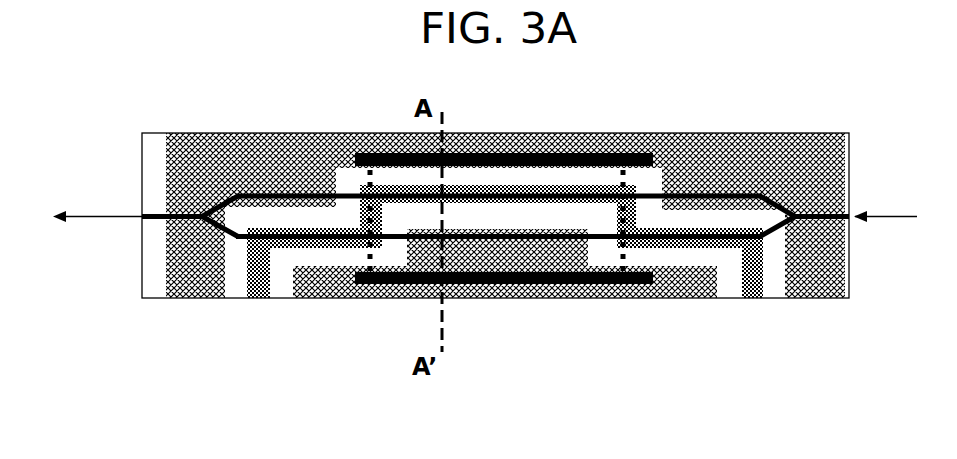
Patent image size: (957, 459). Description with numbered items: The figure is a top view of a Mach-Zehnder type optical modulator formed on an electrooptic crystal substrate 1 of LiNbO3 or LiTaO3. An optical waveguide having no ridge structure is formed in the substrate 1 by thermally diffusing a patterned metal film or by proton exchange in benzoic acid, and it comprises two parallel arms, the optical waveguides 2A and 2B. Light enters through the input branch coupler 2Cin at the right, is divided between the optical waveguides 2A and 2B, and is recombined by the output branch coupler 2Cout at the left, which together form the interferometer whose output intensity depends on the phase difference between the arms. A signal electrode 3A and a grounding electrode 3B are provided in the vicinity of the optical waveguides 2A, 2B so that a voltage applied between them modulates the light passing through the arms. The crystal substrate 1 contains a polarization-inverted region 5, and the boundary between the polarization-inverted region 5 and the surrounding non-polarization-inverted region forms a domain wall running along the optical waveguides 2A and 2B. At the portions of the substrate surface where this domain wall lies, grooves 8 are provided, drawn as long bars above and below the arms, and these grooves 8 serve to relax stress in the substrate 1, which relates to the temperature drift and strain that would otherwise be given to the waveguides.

The crystal substrate 1 is at (850, 162).
The optical waveguide 2A is at (519, 207).
The optical waveguide 2B is at (315, 190).
The input branch coupler 2Cin is at (797, 219).
The output branch coupler 2Cout is at (200, 219).
The signal electrode 3A is at (258, 298).
The grounding electrode 3B is at (803, 298).
The polarization-inverted region 5 is at (626, 227).
The grooves 8 is at (512, 298).